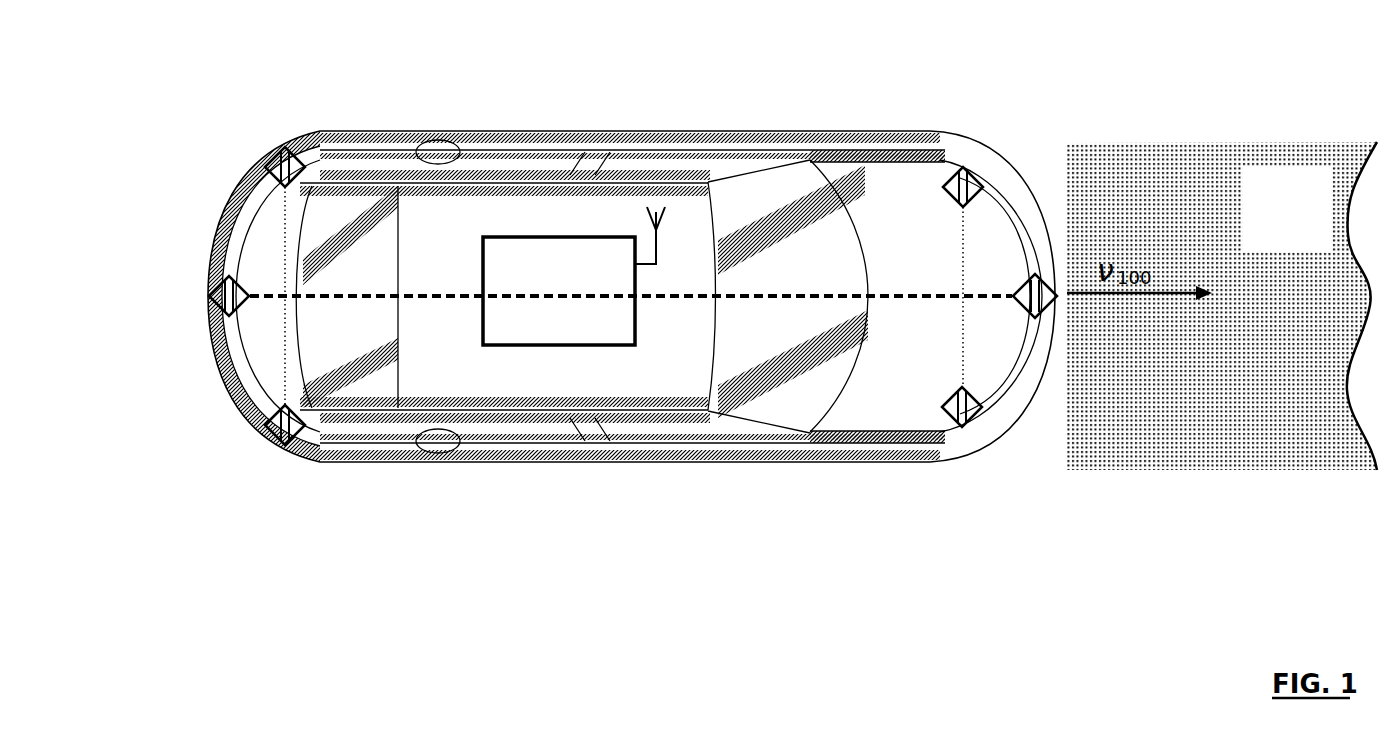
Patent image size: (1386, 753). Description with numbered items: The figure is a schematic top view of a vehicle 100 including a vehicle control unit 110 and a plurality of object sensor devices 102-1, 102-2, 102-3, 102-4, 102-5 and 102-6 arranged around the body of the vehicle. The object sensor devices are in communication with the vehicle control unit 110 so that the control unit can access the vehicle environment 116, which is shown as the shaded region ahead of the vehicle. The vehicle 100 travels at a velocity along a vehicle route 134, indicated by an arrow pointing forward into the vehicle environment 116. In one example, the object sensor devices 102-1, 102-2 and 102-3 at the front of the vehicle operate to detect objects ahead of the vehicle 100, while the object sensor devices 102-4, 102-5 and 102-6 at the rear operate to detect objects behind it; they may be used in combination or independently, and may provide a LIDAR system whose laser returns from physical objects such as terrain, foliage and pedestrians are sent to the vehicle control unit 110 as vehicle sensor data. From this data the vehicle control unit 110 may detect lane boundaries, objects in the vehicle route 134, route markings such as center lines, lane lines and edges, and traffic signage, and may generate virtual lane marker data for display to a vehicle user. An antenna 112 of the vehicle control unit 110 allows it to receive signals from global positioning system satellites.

The vehicle 100 is at (857, 138).
The object sensor device 102-1 is at (1047, 312).
The object sensor device 102-2 is at (951, 203).
The object sensor device 102-3 is at (956, 390).
The object sensor device 102-4 is at (273, 150).
The object sensor device 102-5 is at (212, 285).
The object sensor device 102-6 is at (263, 416).
The vehicle control unit 110 is at (572, 346).
The antenna 112 is at (658, 258).
The vehicle environment 116 is at (1279, 77).
The vehicle route 134 is at (1268, 245).